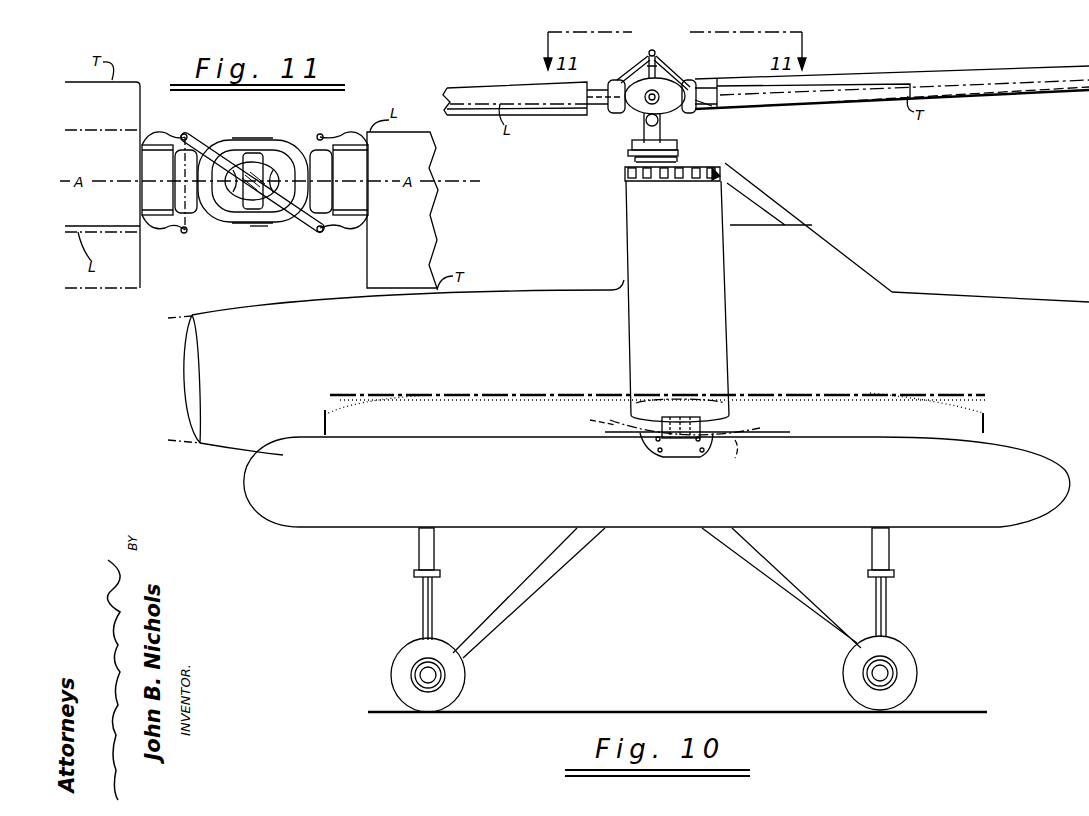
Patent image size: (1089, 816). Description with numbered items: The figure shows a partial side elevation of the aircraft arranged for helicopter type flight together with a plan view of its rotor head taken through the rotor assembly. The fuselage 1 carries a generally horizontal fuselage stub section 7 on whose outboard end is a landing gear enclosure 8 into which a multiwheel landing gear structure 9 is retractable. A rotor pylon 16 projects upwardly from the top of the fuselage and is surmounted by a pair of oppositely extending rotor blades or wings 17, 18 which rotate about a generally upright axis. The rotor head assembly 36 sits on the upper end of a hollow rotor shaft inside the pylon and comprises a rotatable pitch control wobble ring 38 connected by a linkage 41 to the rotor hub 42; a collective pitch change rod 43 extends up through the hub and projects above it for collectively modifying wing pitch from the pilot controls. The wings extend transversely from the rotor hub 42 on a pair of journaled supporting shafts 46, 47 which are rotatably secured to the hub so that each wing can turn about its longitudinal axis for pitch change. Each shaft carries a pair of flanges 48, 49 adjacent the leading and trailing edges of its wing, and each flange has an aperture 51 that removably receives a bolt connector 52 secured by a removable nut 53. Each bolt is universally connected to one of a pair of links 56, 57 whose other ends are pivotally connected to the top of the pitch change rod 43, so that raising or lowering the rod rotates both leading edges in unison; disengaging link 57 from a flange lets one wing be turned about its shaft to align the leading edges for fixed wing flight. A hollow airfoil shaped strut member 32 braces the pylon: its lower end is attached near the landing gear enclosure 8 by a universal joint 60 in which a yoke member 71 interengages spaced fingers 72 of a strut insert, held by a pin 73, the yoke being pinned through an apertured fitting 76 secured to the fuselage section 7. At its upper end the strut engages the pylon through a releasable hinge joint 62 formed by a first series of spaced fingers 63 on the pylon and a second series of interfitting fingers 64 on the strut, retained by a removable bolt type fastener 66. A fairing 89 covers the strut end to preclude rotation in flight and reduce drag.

In FIG. 10, the fuselage 1 is at (1047, 313).
In FIG. 10, the fuselage stub section 7 is at (937, 413).
In FIG. 10, the landing gear enclosure 8 is at (853, 500).
In FIG. 10, the landing gear structure 9 is at (886, 618).
In FIG. 10, the rotor pylon 16 is at (765, 203).
In FIG. 11, the rotor blade or wing 17 is at (108, 161).
In FIG. 10, the rotor blade or wing 17 is at (487, 88).
In FIG. 11, the rotor blade or wing 18 is at (409, 250).
In FIG. 10, the rotor blade or wing 18 is at (890, 80).
In FIG. 10, the strut member 32 is at (690, 300).
In FIG. 11, the rotor head assembly 36 is at (266, 247).
In FIG. 10, the rotor head assembly 36 is at (630, 116).
In FIG. 10, the pitch control wobble ring 38 is at (632, 152).
In FIG. 10, the linkage 41 is at (662, 120).
In FIG. 11, the rotor hub 42 is at (282, 146).
In FIG. 10, the rotor hub 42 is at (672, 86).
In FIG. 11, the collective pitch change rod 43 is at (252, 152).
In FIG. 10, the collective pitch change rod 43 is at (654, 58).
In FIG. 11, the supporting shaft 46 is at (168, 177).
In FIG. 11, the supporting shaft 47 is at (362, 177).
In FIG. 11, the flange 48 is at (340, 142).
In FIG. 10, the flange 48 is at (587, 100).
In FIG. 11, the flange 49 is at (163, 135).
In FIG. 10, the flange 49 is at (800, 100).
In FIG. 11, the aperture 51 is at (320, 134).
In FIG. 11, the bolt connector 52 is at (187, 138).
In FIG. 10, the nut 53 is at (700, 106).
In FIG. 11, the link 56 is at (259, 228).
In FIG. 10, the link 56 is at (698, 88).
In FIG. 11, the link 57 is at (236, 152).
In FIG. 10, the link 57 is at (627, 78).
In FIG. 10, the joint 60 is at (730, 433).
In FIG. 10, the releasable hinge joint 62 is at (716, 174).
In FIG. 10, the first series of spaced fingers 63 is at (662, 181).
In FIG. 10, the second series of spaced interfitting fingers 64 is at (689, 181).
In FIG. 10, the bolt type fastener 66 is at (629, 176).
In FIG. 10, the yoke member 71 is at (688, 452).
In FIG. 10, the fingers 72 is at (670, 416).
In FIG. 10, the pin 73 is at (595, 422).
In FIG. 10, the apertured fitting 76 is at (659, 452).
In FIG. 10, the fairing 89 is at (736, 456).